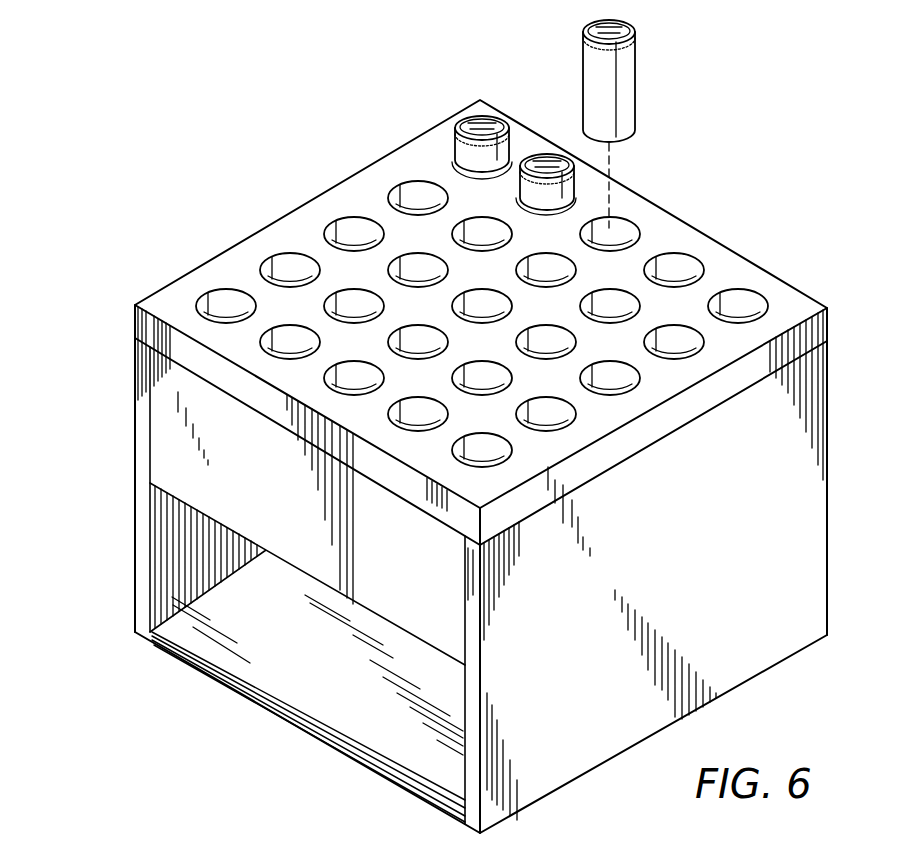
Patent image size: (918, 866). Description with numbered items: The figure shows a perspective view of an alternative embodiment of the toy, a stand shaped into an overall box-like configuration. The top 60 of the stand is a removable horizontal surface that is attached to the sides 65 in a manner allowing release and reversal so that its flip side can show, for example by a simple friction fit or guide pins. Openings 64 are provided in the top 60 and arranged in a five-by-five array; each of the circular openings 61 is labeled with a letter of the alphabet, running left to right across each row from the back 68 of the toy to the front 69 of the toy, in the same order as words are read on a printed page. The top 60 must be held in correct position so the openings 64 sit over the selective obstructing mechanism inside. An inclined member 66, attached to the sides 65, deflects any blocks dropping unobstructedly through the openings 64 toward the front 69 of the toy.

The top 60 is at (658, 227).
The circular openings 61 is at (476, 124).
The openings 64 is at (735, 300).
The sides 65 is at (143, 376).
The inclined member 66 is at (265, 690).
The back 68 is at (688, 96).
The front 69 is at (112, 431).